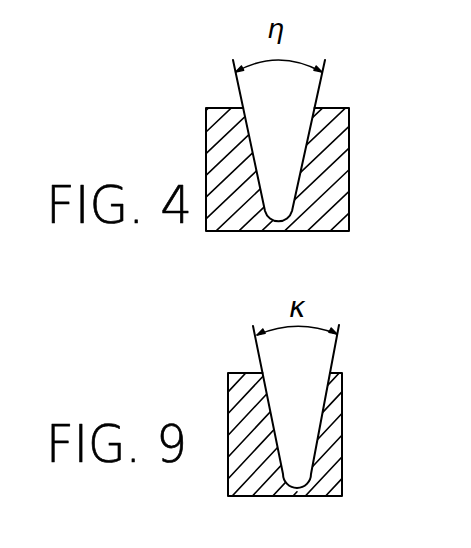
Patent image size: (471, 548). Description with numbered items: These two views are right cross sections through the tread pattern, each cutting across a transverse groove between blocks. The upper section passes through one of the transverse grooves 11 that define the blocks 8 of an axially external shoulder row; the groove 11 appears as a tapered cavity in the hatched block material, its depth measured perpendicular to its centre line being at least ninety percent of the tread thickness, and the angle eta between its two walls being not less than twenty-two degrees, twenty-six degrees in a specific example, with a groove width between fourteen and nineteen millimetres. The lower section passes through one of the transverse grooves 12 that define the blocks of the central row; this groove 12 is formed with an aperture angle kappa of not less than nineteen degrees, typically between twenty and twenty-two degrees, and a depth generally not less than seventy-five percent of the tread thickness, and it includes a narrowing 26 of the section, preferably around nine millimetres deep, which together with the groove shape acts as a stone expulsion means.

In FIG. 4, the blocks in the shoulder rows 8 is at (337, 153).
In FIG. 4, the transverse grooves 11 is at (283, 103).
In FIG. 9, the transverse grooves 12 is at (300, 381).
In FIG. 9, the narrowing 26 is at (324, 413).